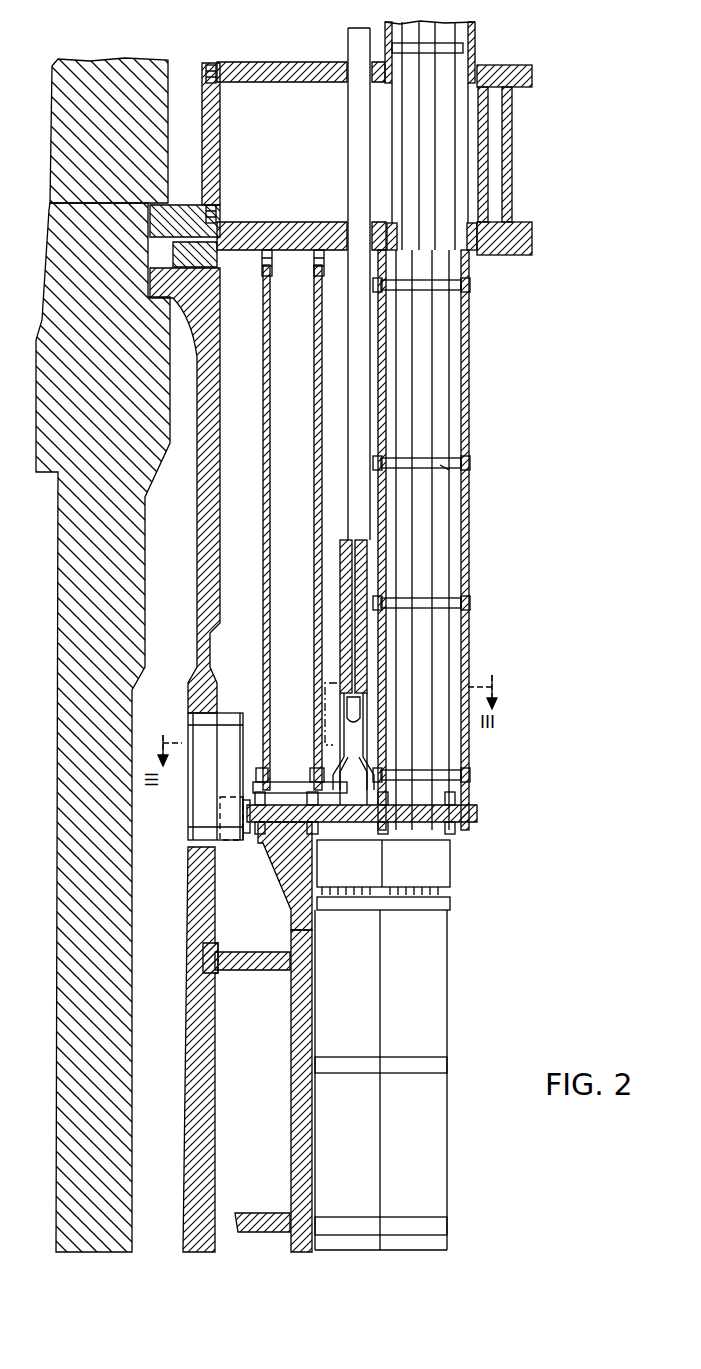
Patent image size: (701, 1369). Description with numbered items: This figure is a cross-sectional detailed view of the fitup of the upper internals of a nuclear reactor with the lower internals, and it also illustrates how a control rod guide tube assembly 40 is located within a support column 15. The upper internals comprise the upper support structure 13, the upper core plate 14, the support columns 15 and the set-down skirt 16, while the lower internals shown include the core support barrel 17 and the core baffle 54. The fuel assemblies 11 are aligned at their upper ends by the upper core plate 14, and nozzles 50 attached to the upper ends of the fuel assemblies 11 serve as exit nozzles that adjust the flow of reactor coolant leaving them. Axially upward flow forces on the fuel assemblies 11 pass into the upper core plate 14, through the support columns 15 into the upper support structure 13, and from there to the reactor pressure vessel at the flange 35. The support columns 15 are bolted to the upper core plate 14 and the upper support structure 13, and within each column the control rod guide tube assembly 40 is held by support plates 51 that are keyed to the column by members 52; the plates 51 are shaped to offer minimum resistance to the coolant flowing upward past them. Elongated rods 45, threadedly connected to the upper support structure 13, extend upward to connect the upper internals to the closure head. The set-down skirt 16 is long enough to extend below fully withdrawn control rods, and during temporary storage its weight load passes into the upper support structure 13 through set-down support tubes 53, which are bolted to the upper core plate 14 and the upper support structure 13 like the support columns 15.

The fuel assemblies 11 is at (440, 957).
The upper support structure 13 is at (268, 92).
The upper core plate 14 is at (470, 822).
The support columns 15 is at (470, 320).
The set-down skirt 16 is at (295, 905).
The core support barrel 17 is at (212, 432).
The flange 35 is at (165, 203).
The control rod guide tube assembly 40 is at (443, 345).
The elongated rods 45 is at (349, 36).
The nozzles 50 is at (437, 866).
The support plates 51 is at (440, 465).
The members 52 is at (471, 464).
The set-down support tubes 53 is at (314, 404).
The core baffle 54 is at (290, 1072).